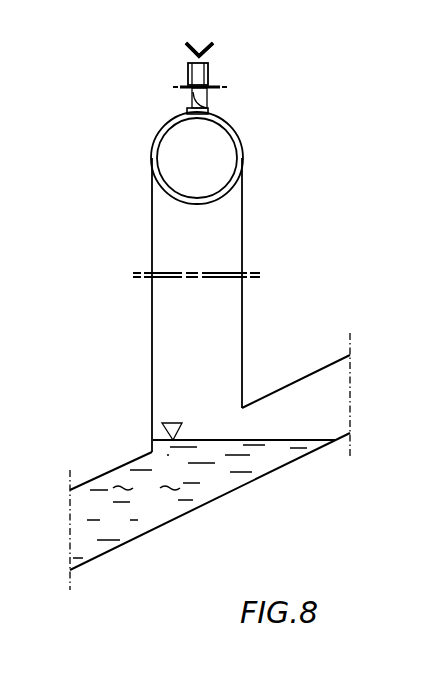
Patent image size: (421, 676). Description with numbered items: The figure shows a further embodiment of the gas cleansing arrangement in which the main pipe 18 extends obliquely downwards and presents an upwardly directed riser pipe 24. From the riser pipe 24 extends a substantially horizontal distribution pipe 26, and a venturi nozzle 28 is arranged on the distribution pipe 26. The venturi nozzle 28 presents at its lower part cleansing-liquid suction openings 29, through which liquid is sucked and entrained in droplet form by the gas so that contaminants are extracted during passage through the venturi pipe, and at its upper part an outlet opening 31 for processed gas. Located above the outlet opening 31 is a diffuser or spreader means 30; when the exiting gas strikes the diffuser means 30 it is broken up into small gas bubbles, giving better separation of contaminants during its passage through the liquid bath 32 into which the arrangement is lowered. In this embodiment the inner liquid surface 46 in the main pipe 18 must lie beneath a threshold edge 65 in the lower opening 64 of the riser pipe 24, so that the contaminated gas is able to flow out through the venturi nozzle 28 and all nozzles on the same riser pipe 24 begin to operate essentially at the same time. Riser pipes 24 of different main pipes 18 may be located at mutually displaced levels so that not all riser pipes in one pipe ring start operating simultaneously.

The main pipe 18 is at (128, 460).
The riser pipe 24 is at (230, 228).
The distribution pipe 26 is at (230, 170).
The venturi nozzle 28 is at (208, 74).
The cleansing-liquid suction opening 29 is at (185, 93).
The diffuser means 30 is at (215, 51).
The outlet opening 31 is at (186, 54).
The liquid bath 32 is at (190, 501).
The inner liquid surface 46 is at (202, 440).
The lower opening 64 is at (228, 415).
The threshold edge 65 is at (245, 416).